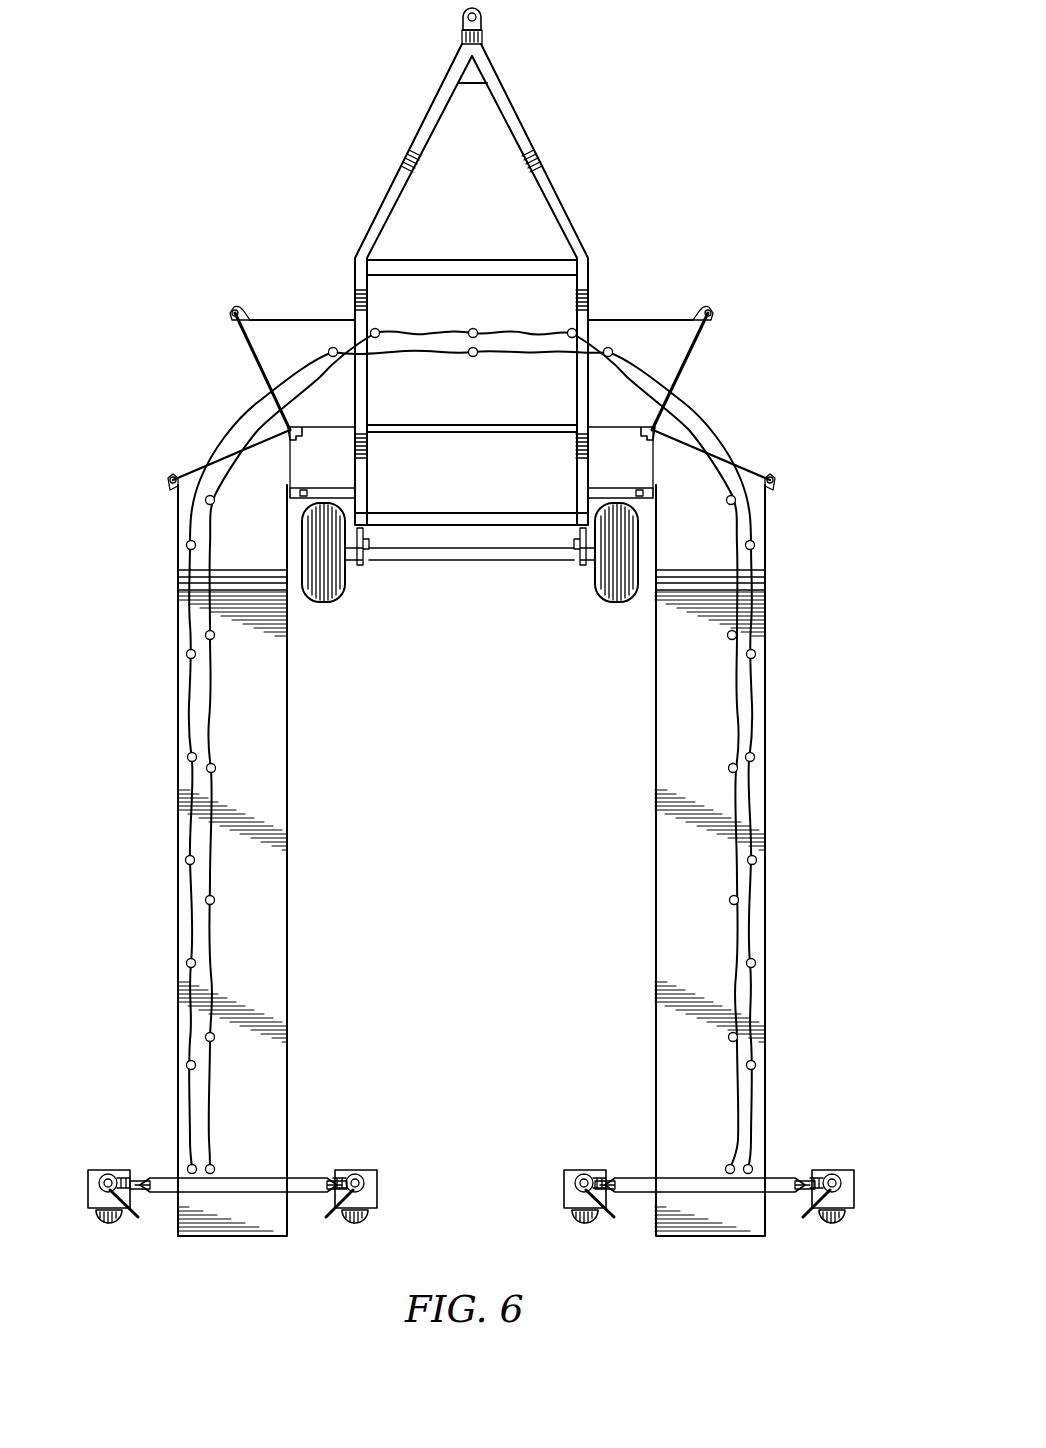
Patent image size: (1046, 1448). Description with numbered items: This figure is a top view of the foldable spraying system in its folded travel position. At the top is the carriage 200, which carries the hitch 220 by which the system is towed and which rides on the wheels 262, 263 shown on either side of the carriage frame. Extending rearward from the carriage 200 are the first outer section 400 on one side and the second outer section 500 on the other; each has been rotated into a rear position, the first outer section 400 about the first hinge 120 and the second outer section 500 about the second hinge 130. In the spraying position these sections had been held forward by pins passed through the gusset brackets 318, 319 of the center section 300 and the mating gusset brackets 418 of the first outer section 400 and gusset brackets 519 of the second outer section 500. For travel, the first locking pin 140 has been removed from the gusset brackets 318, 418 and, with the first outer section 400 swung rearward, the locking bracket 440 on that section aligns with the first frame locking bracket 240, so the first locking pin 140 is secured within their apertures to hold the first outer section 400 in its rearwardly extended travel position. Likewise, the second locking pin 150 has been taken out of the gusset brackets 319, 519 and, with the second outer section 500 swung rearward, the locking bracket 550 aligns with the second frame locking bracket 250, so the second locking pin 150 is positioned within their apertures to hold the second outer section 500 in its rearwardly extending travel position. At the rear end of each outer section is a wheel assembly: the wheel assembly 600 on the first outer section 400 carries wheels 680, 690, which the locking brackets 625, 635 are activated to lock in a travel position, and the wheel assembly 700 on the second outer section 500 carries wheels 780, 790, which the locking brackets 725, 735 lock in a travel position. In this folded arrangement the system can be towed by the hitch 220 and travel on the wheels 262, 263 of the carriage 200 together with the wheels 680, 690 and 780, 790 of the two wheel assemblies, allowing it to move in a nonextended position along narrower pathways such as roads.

The carriage 200 is at (540, 160).
The hitch 220 is at (484, 18).
The center section 300 is at (632, 318).
The gusset brackets 318 is at (708, 307).
The gusset brackets 319 is at (234, 307).
The second hinge 130 is at (300, 428).
The first hinge 120 is at (643, 428).
The second locking pin 150 is at (322, 475).
The first locking pin 140 is at (638, 490).
The second frame locking bracket 250 is at (352, 493).
The first frame locking bracket 240 is at (591, 493).
The gusset brackets 519 is at (168, 482).
The gusset brackets 418 is at (776, 482).
The locking bracket 550 is at (288, 511).
The locking bracket 440 is at (654, 511).
The wheel 263 is at (326, 605).
The wheel 262 is at (612, 605).
The second outer section 500 is at (288, 876).
The first outer section 400 is at (656, 876).
The wheel assembly 700 is at (300, 1178).
The wheel assembly 600 is at (773, 1178).
The locking bracket 725 is at (92, 1190).
The locking bracket 735 is at (360, 1190).
The locking bracket 635 is at (568, 1190).
The locking bracket 625 is at (838, 1190).
The wheel 780 is at (108, 1226).
The wheel 790 is at (355, 1226).
The wheel 690 is at (586, 1226).
The wheel 680 is at (832, 1226).